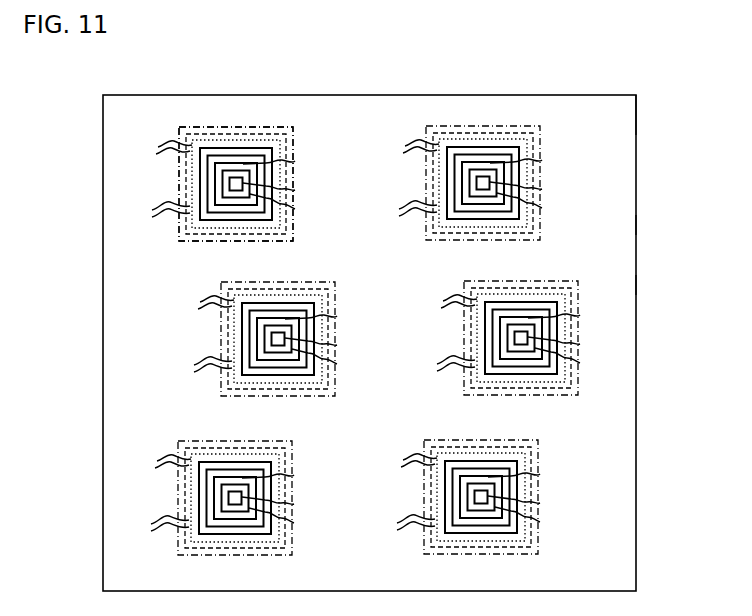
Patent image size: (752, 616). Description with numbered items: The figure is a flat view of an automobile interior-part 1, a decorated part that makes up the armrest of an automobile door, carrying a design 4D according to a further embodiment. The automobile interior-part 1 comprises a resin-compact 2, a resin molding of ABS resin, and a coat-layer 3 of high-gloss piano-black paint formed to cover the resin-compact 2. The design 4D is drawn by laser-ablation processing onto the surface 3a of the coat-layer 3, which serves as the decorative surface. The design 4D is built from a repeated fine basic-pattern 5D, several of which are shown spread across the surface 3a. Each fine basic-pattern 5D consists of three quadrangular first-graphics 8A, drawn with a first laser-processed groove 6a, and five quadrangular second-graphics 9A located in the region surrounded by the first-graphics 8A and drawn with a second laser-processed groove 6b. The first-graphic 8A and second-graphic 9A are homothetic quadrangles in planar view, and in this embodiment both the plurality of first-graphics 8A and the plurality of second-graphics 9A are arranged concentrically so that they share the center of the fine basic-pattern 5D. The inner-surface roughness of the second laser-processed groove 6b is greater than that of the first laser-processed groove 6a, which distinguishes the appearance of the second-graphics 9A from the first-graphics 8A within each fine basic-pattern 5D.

The automobile interior-part 1 is at (652, 131).
The resin-compact 2 is at (636, 172).
The coat-layer 3 is at (636, 225).
The surface of the coat-layer 3a is at (636, 284).
The design 4D is at (167, 123).
The fine basic-pattern 5D is at (349, 340).
The first laser-processed groove 6a is at (304, 301).
The second laser-processed groove 6b is at (404, 319).
The first-graphic 8A is at (298, 368).
The second-graphic 9A is at (425, 357).